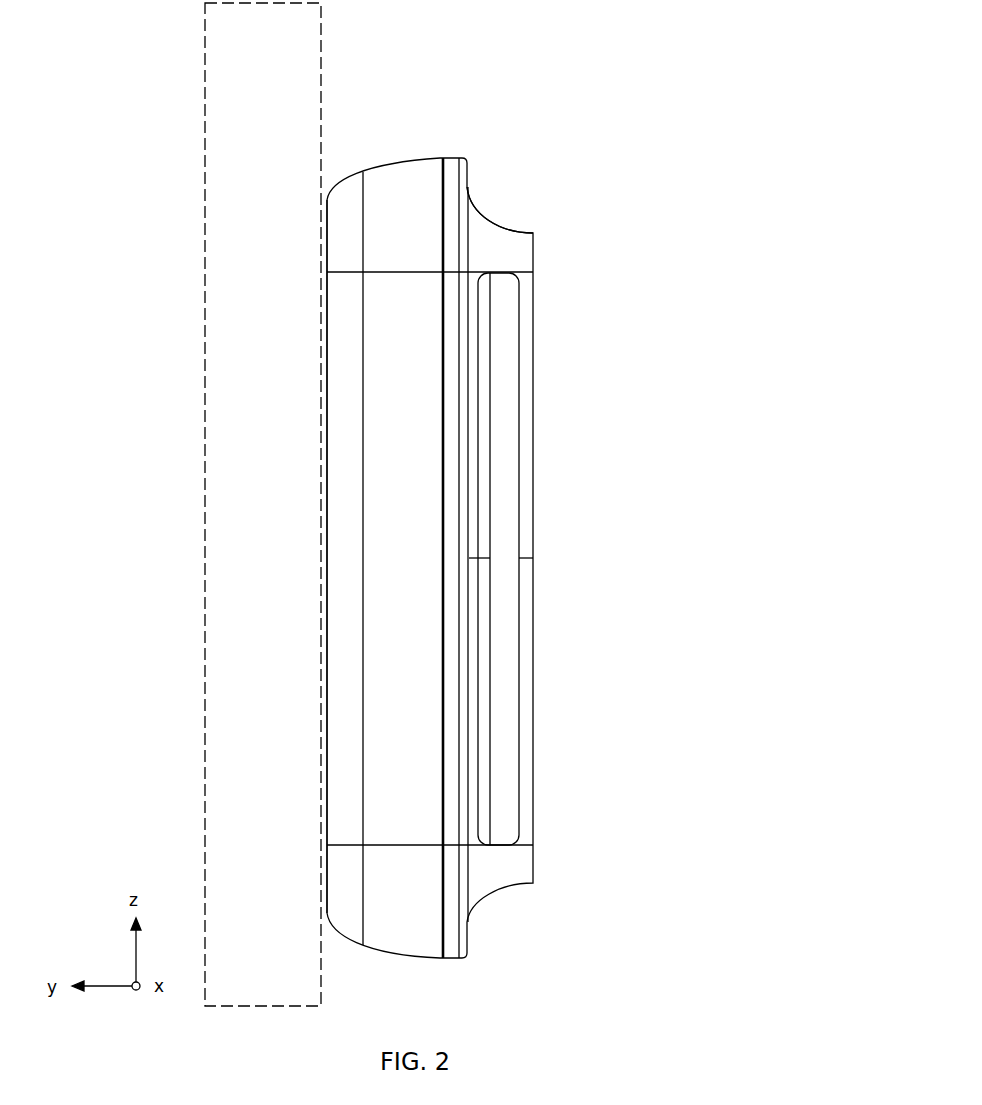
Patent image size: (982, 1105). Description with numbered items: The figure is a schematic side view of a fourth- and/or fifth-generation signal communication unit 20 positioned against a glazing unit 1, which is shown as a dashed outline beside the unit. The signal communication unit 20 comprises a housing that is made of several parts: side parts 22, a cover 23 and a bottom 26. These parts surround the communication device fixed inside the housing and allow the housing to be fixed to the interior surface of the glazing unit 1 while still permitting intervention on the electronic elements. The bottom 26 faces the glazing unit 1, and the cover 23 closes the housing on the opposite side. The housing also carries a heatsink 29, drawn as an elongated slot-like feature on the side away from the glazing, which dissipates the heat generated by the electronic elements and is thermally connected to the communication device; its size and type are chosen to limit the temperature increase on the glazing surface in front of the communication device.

The glazing unit 1 is at (218, 202).
The 4G and/or 5G signal communication unit 20 is at (574, 516).
The side parts 22 is at (408, 190).
The cover 23 is at (470, 188).
The bottom 26 is at (331, 806).
The heatsink 29 is at (507, 463).